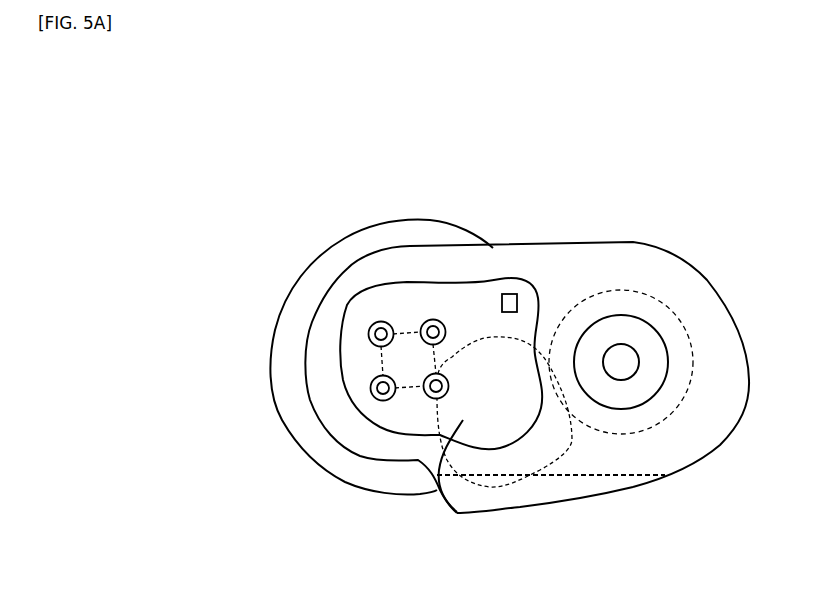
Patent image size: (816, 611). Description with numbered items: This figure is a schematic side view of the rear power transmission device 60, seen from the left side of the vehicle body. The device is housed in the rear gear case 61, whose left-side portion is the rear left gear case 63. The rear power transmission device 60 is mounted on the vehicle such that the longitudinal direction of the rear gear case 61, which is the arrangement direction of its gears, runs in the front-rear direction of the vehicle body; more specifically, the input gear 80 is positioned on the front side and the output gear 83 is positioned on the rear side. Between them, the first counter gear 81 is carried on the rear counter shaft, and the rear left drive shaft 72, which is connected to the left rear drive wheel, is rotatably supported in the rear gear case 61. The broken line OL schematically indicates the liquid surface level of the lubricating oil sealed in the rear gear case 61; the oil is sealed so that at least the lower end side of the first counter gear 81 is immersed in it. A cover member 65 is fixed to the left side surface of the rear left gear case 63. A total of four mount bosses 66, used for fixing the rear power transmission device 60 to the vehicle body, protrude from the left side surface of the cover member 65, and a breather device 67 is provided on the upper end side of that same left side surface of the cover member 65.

The rear power transmission device 60 is at (518, 163).
The rear gear case 61 is at (608, 232).
The rear left gear case 63 is at (521, 500).
The cover member 65 is at (456, 509).
The mount bosses 66 is at (369, 332).
The breather device 67 is at (515, 298).
The rear left drive shaft 72 is at (621, 362).
The input gear 80 is at (411, 330).
The first counter gear 81 is at (567, 447).
The output gear 83 is at (670, 413).
The liquid surface level of the lubricating oil OL is at (573, 484).